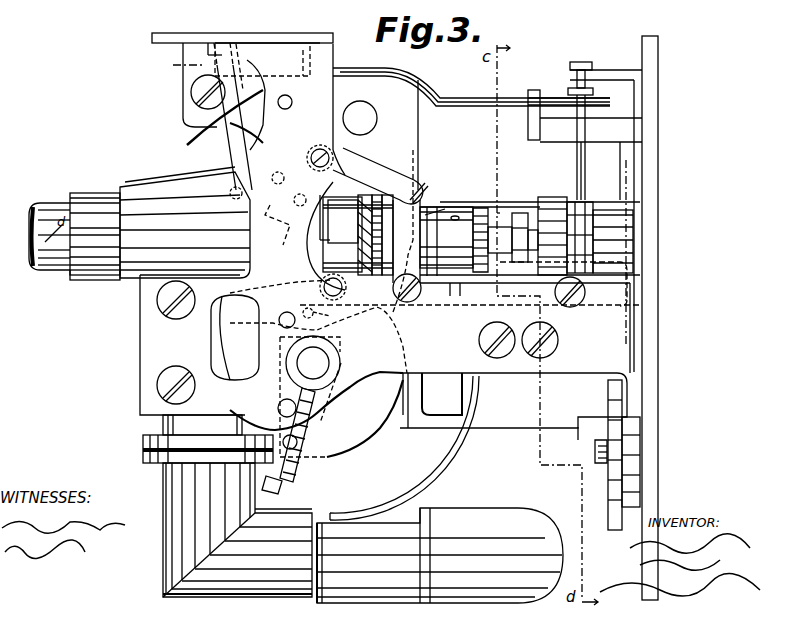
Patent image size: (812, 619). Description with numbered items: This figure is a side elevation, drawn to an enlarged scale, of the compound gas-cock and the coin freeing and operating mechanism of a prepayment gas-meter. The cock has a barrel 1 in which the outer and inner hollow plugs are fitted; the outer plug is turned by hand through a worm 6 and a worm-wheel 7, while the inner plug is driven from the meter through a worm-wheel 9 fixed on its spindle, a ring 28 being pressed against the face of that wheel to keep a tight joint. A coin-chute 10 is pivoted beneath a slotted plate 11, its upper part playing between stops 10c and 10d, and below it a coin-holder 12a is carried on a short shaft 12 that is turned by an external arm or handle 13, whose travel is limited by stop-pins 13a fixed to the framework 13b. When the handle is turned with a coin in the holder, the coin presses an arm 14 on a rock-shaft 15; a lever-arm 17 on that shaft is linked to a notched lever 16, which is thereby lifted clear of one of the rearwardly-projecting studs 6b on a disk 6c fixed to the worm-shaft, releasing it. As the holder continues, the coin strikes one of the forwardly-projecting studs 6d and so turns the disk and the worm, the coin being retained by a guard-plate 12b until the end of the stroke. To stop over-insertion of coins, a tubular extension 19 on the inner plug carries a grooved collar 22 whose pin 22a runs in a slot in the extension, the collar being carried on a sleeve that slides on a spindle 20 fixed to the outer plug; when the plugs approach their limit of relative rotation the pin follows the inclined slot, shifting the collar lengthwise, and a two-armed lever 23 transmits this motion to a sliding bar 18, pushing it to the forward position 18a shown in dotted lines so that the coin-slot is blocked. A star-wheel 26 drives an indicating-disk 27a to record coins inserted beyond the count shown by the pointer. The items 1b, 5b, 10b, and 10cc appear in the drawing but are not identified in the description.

The barrel 1 is at (139, 223).
The collar 1b is at (208, 439).
The pin 5b is at (359, 366).
The worm 6 is at (348, 290).
The rearwardly-projecting studs 6b is at (330, 314).
The disk 6c is at (369, 389).
The forwardly-projecting studs 6d is at (266, 490).
The worm-wheel 7 is at (331, 230).
The worm-wheel 9 is at (358, 235).
The coin-chute 10 is at (235, 155).
The cam arc 10b is at (193, 130).
The stop 10c is at (230, 193).
The pin 10cc is at (305, 189).
The stop 10d is at (275, 166).
The slotted plate 11 is at (189, 42).
The short shaft 12 is at (310, 396).
The coin-holder 12a is at (326, 425).
The guard-plate 12b is at (435, 460).
The arm or handle 13 is at (298, 472).
The stop-pins 13a is at (279, 406).
The framework 13b is at (336, 261).
The arm 14 is at (282, 226).
The rock-shaft 15 is at (318, 145).
The lever 16 is at (446, 291).
The lever-arm 17 is at (380, 215).
The sliding bar 18 is at (450, 108).
The forward position of bar 18a is at (195, 70).
The tubular extension 19 is at (530, 239).
The spindle 20 is at (492, 212).
The grooved collar 22 is at (583, 230).
The pin 22a is at (548, 196).
The two-armed lever 23 is at (573, 82).
The star-wheel 26 is at (640, 472).
The indicating-disk 27a is at (640, 452).
The ring 28 is at (433, 215).